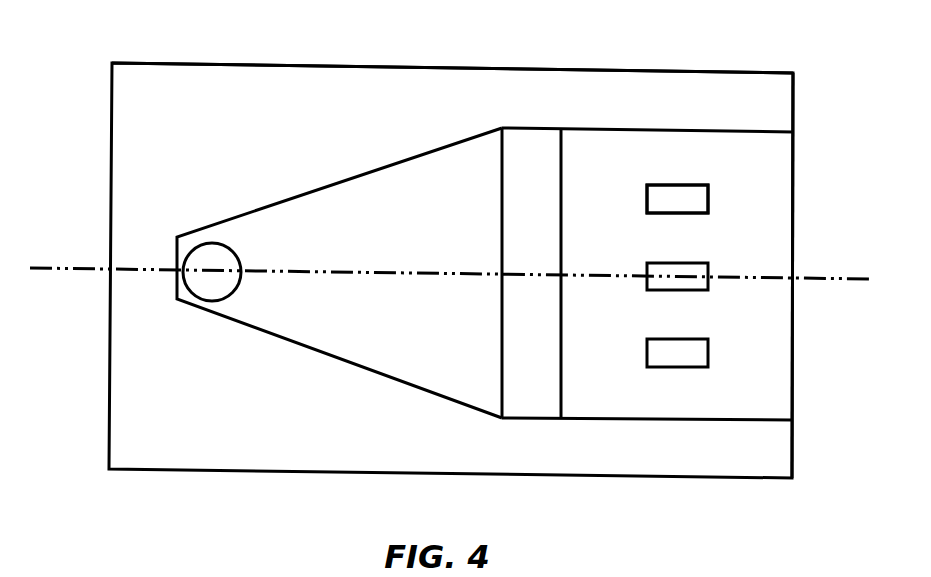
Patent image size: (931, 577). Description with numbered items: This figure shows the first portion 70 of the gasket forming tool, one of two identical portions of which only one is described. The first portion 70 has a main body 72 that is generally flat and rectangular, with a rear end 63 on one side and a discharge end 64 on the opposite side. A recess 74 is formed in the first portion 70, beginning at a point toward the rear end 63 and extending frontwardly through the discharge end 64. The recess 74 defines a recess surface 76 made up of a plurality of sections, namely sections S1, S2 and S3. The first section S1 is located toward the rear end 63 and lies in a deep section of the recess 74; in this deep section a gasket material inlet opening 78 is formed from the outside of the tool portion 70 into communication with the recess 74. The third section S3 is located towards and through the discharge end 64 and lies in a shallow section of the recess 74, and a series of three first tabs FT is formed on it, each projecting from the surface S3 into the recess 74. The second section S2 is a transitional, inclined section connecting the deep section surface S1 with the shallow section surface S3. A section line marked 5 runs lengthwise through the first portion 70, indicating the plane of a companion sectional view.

The first portion 70 is at (445, 36).
The main body 72 is at (226, 63).
The recess 74 is at (303, 217).
The recess surface 76 is at (769, 359).
The gasket material inlet opening 78 is at (207, 258).
The rear end 63 is at (108, 392).
The discharge end 64 is at (794, 108).
The section line 5- 5 is at (31, 268).
The first tabs FT is at (672, 190).
The first section S1 is at (380, 248).
The second section S2 is at (520, 249).
The third section S3 is at (736, 254).